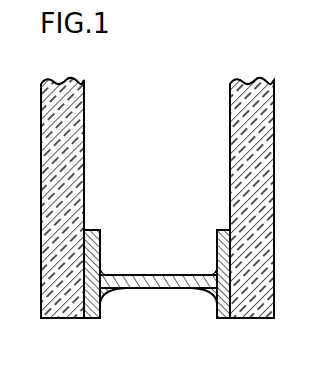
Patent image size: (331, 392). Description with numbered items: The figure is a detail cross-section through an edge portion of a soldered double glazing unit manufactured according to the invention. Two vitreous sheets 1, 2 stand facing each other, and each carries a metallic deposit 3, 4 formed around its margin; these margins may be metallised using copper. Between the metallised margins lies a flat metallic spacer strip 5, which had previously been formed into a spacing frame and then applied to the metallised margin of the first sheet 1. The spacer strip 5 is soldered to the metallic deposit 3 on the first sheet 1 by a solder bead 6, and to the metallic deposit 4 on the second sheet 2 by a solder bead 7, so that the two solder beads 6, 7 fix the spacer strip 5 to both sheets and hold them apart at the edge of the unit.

The vitreous sheet 1 is at (78, 117).
The vitreous sheet 2 is at (242, 115).
The metallic deposit 3 is at (100, 230).
The metallic deposit 4 is at (217, 230).
The flat metallic spacer strip 5 is at (161, 275).
The solder bead 6 is at (105, 296).
The solder bead 7 is at (213, 298).